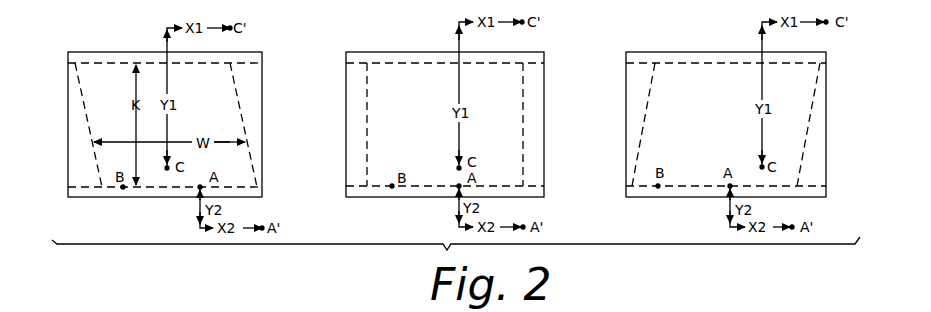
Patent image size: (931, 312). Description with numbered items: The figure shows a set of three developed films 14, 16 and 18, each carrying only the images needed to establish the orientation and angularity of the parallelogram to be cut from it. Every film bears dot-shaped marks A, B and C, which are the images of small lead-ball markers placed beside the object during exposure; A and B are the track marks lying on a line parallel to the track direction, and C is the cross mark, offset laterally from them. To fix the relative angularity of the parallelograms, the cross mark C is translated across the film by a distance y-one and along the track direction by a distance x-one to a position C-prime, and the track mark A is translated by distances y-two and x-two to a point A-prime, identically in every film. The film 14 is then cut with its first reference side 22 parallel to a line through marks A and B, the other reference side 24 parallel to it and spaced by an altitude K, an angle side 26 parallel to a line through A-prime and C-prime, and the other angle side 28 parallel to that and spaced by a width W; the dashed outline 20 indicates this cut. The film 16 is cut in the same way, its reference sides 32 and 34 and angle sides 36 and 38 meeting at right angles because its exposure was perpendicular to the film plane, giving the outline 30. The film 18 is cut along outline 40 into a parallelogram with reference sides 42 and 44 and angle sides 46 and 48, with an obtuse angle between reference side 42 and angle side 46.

The film 14 is at (263, 100).
The film 16 is at (545, 100).
The film 18 is at (827, 63).
The first pattern outline 20 is at (165, 125).
The first reference side 22 is at (165, 188).
The other reference side 24 is at (128, 60).
The angle side 26 is at (255, 165).
The other angle side 28 is at (82, 98).
The second pattern outline 30 is at (446, 124).
The reference side 32 is at (443, 185).
The reference side 34 is at (412, 63).
The angle side 36 is at (523, 167).
The angle side 38 is at (367, 115).
The third pattern outline 40 is at (732, 124).
The reference side 42 is at (682, 187).
The reference side 44 is at (705, 63).
The angle side 46 is at (803, 158).
The angle side 48 is at (645, 117).